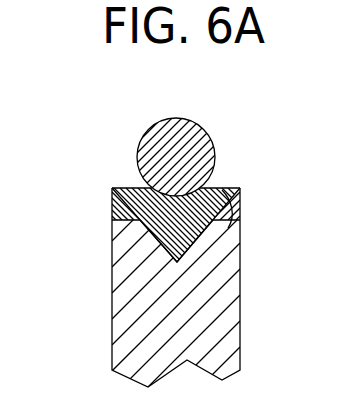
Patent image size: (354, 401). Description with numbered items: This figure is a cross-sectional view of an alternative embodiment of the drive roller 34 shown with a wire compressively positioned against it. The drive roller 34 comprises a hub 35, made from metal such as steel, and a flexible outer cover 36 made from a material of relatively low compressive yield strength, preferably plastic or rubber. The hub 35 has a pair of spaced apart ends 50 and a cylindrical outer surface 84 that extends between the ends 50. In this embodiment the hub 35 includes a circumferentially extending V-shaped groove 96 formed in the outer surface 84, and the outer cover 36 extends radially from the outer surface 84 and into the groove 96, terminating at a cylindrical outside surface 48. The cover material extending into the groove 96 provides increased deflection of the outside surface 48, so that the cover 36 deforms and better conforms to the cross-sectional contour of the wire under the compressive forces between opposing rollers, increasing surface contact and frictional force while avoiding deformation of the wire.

The drive roller 34 is at (250, 186).
The hub 35 is at (243, 268).
The flexible outer cover 36 is at (243, 200).
The cylindrical outside surface 48 is at (120, 188).
The ends 50 is at (112, 330).
The cylindrical outer surface 84 is at (226, 188).
The V-shaped groove 96 is at (160, 244).